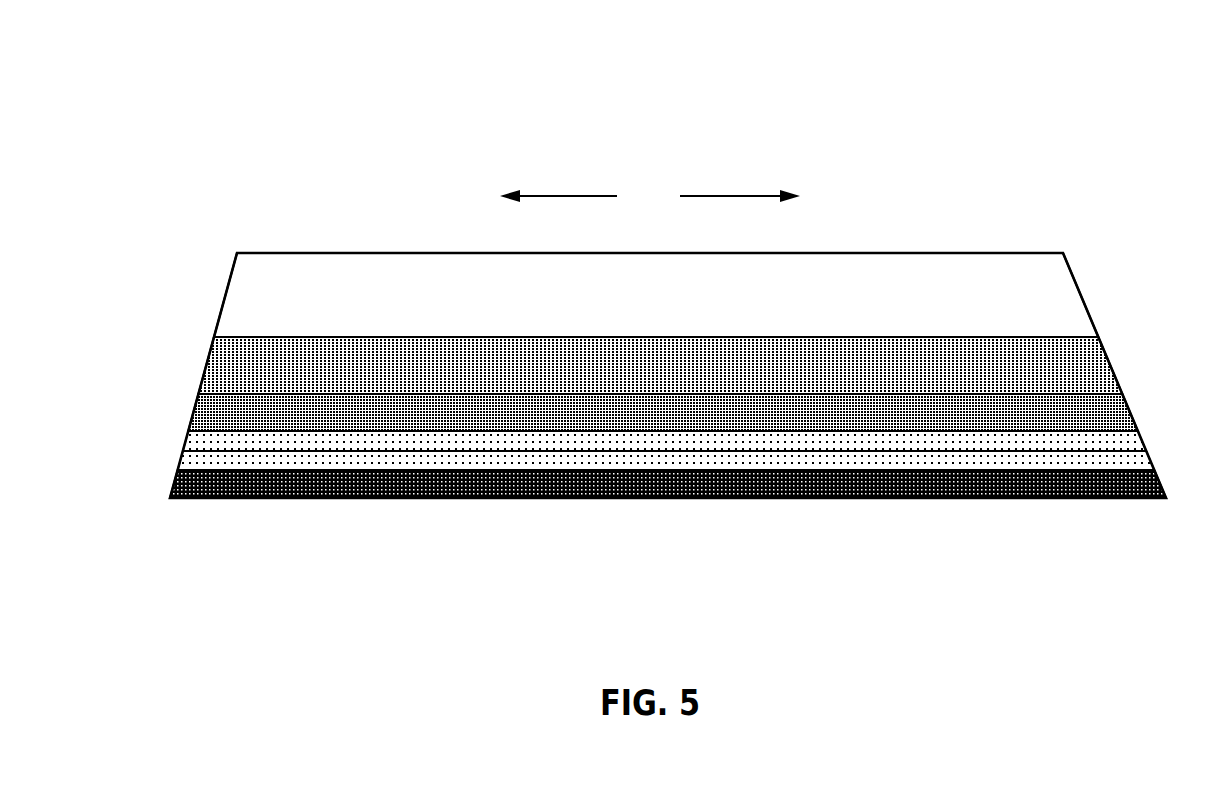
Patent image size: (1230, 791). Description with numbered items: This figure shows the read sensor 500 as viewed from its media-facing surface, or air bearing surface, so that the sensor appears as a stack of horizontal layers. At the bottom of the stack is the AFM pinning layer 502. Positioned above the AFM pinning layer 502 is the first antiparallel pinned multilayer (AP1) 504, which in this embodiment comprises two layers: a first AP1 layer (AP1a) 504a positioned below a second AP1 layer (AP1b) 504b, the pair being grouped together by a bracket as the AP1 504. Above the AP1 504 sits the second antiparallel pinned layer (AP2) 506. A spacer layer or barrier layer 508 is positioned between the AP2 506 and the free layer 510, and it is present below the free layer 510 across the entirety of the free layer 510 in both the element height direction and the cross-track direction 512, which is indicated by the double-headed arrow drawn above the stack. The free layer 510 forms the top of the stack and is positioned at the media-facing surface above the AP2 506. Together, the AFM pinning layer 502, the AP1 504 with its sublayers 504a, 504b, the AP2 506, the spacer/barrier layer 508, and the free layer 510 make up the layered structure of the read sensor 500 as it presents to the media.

The read sensor 500 is at (392, 120).
The AFM pinning layer 502 is at (651, 482).
The first antiparallel pinned multilayer (AP1) 504 is at (1133, 430).
The first AP1 layer (AP1a) 504a is at (188, 459).
The second AP1 layer (AP1b) 504b is at (203, 445).
The second antiparallel pinned layer (AP2) 506 is at (1103, 413).
The spacer layer or barrier layer 508 is at (670, 377).
The free layer 510 is at (670, 310).
The cross-track direction 512 is at (650, 197).